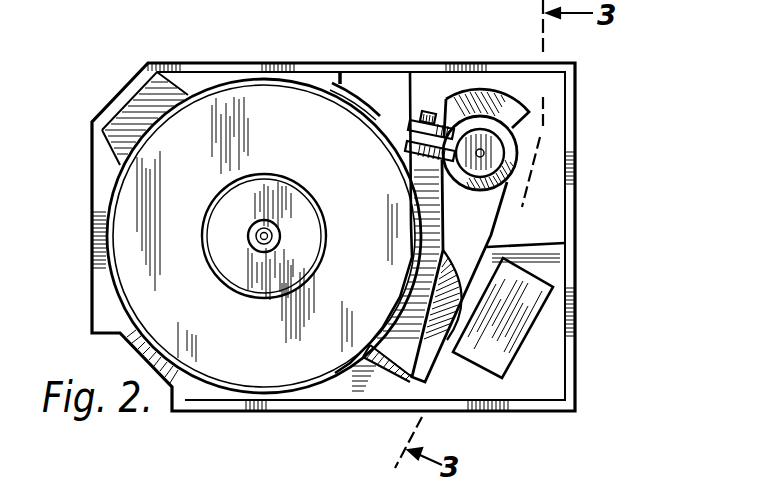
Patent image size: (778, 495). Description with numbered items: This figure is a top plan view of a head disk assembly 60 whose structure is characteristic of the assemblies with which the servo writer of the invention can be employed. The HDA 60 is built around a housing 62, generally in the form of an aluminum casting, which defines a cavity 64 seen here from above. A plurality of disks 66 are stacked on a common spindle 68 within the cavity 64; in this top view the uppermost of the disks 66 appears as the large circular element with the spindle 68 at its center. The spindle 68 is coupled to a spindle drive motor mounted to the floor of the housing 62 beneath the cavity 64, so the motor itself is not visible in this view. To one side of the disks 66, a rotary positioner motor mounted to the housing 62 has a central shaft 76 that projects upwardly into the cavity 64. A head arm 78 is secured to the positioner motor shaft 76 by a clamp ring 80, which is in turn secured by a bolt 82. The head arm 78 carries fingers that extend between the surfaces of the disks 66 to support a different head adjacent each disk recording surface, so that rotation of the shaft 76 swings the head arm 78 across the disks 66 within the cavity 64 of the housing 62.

The head disk assembly 60 is at (584, 216).
The housing 62 is at (577, 370).
The cavity 64 is at (205, 90).
The disks 66 is at (145, 302).
The spindle 68 is at (253, 240).
The central shaft 76 is at (493, 155).
The head arm 78 is at (503, 233).
The clamp ring 80 is at (500, 120).
The bolt 82 is at (425, 115).